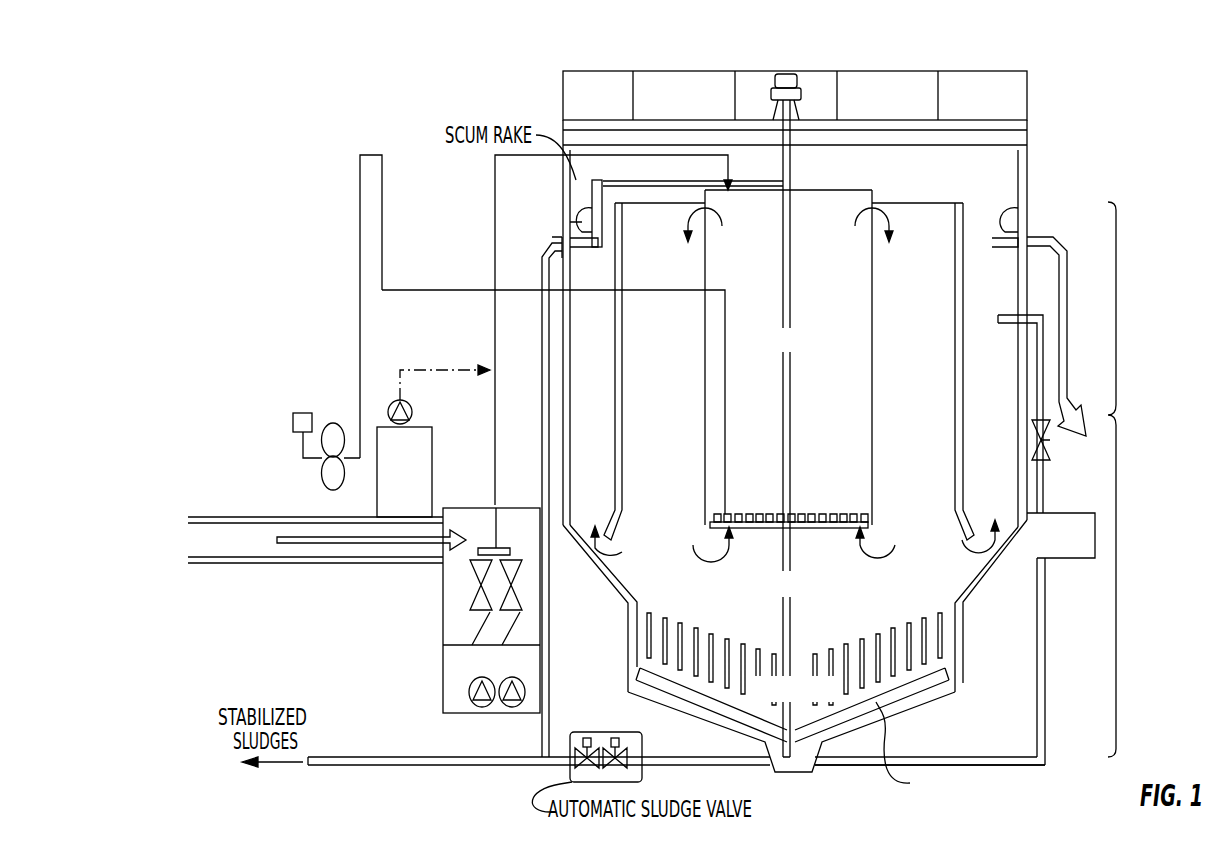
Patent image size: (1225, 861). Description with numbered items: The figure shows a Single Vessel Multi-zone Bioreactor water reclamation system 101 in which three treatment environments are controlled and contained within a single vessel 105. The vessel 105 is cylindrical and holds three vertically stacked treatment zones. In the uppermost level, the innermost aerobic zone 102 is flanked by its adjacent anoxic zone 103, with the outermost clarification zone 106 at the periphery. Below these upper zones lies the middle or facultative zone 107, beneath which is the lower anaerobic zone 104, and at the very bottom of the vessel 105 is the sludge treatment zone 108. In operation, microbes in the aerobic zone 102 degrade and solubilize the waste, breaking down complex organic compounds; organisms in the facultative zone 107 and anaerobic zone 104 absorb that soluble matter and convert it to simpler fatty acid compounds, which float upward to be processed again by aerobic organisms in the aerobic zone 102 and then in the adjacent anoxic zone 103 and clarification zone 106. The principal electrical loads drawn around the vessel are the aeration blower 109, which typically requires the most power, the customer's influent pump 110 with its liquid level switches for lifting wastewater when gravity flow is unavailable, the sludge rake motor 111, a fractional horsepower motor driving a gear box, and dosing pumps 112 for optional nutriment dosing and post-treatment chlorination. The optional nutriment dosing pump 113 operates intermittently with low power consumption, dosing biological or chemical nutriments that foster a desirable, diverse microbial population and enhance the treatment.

The Single Vessel Multi-zone Bioreactor water reclamation system 101 is at (340, 82).
The aerobic zone 102 is at (850, 191).
The anoxic zone 103 is at (657, 200).
The anaerobic zone 104 is at (948, 632).
The single vessel 105 is at (1132, 479).
The clarification zone 106 is at (562, 270).
The facultative zone 107 is at (612, 589).
The sludge treatment zone 108 is at (810, 768).
The aeration blower 109 is at (343, 425).
The influent pump 110 is at (450, 622).
The sludge rake motor 111 is at (801, 72).
The dosing pump 112 is at (374, 440).
The optional nutriment dosing pump 113 is at (432, 474).